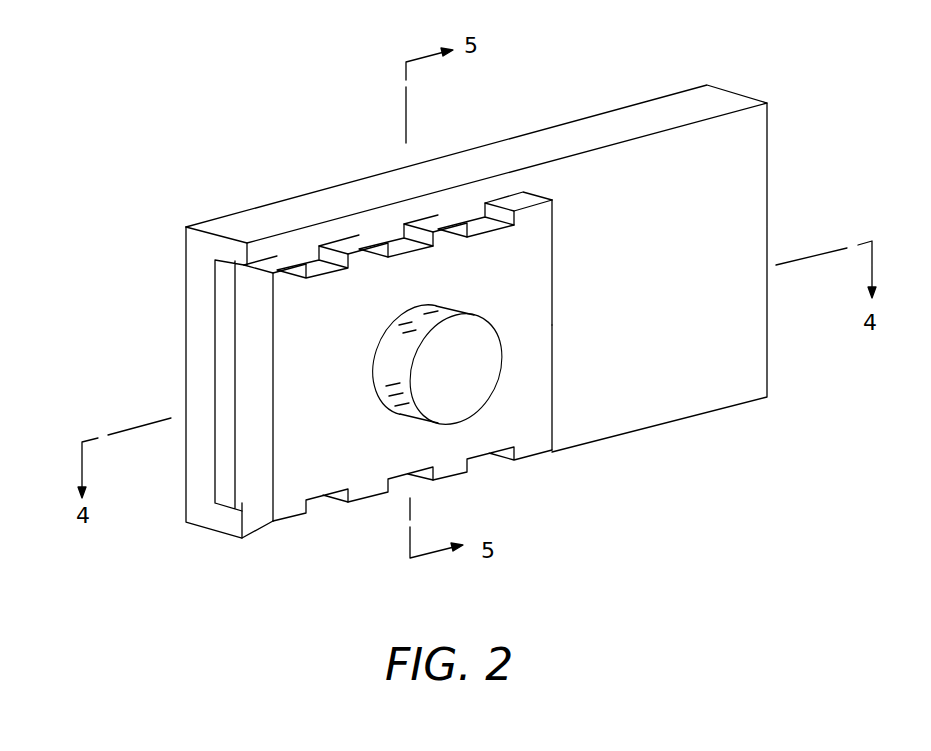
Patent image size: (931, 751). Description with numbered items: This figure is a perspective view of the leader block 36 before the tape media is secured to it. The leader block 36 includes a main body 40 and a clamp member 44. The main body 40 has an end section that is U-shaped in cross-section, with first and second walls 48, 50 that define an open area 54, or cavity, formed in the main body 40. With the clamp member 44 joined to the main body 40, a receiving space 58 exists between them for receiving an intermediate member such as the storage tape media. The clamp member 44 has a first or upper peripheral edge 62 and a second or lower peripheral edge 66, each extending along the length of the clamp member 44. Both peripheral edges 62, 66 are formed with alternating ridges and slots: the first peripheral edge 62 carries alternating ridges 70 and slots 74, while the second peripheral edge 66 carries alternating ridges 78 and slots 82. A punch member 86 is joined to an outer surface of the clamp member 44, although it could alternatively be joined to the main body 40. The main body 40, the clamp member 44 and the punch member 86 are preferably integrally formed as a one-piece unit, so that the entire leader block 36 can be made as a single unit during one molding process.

The leader block 36 is at (150, 297).
The main body 40 is at (627, 87).
The clamp member 44 is at (260, 503).
The first wall 48 is at (285, 243).
The second wall 50 is at (305, 514).
The open area 54 is at (383, 236).
The receiving space 58 is at (216, 289).
The first peripheral edge 62 is at (552, 202).
The second peripheral edge 66 is at (552, 452).
The ridges 70 is at (287, 272).
The slots 74 is at (333, 272).
The ridges 78 is at (373, 497).
The slots 82 is at (430, 470).
The punch member 86 is at (480, 325).